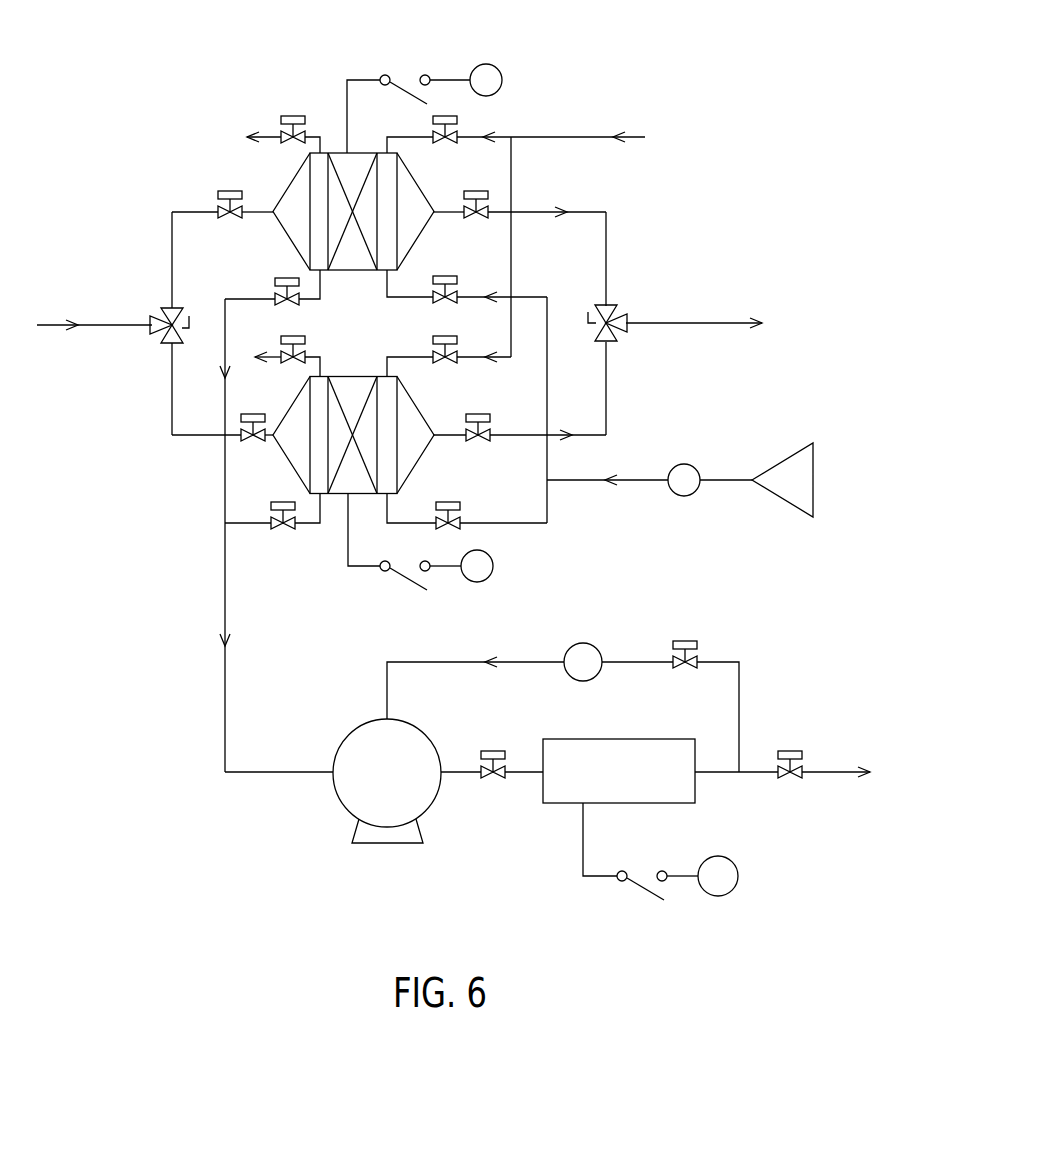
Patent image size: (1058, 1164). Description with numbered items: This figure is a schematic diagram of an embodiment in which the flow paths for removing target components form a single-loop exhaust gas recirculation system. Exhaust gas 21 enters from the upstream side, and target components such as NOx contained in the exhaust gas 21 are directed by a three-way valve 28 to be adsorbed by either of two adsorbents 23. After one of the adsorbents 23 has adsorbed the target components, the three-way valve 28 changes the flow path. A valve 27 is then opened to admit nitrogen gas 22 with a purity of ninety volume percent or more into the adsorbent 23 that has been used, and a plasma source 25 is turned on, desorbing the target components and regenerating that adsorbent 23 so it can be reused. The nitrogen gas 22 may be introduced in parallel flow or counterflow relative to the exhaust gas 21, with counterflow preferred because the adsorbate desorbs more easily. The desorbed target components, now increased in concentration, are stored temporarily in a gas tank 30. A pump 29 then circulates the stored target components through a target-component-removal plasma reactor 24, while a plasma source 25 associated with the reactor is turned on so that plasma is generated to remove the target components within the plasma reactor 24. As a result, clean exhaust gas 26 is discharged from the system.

The exhaust gas 21 is at (55, 322).
The nitrogen gas 22 is at (633, 137).
The adsorbent 23 is at (365, 275).
The target-component-removal plasma reactor 24 is at (630, 739).
The plasma source 25 is at (497, 67).
The clean exhaust gas 26 is at (703, 322).
The valve 27 is at (458, 129).
The three-way valve 28 is at (162, 315).
The pump 29 is at (691, 466).
The gas tank 30 is at (342, 793).